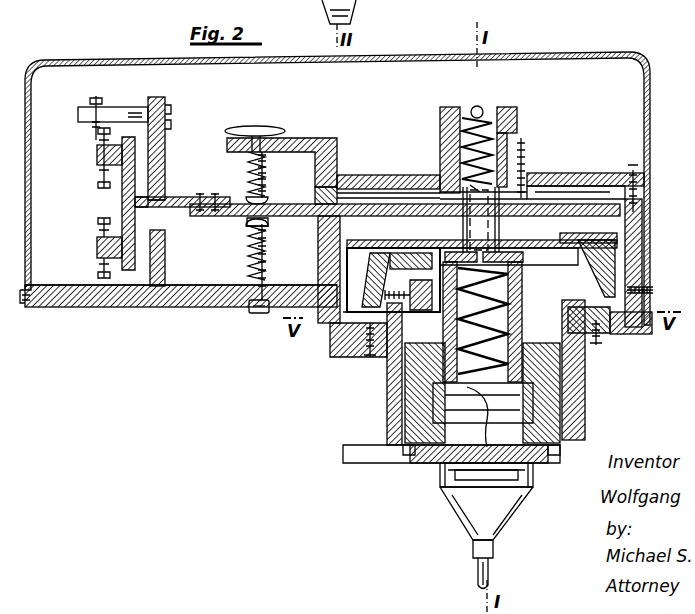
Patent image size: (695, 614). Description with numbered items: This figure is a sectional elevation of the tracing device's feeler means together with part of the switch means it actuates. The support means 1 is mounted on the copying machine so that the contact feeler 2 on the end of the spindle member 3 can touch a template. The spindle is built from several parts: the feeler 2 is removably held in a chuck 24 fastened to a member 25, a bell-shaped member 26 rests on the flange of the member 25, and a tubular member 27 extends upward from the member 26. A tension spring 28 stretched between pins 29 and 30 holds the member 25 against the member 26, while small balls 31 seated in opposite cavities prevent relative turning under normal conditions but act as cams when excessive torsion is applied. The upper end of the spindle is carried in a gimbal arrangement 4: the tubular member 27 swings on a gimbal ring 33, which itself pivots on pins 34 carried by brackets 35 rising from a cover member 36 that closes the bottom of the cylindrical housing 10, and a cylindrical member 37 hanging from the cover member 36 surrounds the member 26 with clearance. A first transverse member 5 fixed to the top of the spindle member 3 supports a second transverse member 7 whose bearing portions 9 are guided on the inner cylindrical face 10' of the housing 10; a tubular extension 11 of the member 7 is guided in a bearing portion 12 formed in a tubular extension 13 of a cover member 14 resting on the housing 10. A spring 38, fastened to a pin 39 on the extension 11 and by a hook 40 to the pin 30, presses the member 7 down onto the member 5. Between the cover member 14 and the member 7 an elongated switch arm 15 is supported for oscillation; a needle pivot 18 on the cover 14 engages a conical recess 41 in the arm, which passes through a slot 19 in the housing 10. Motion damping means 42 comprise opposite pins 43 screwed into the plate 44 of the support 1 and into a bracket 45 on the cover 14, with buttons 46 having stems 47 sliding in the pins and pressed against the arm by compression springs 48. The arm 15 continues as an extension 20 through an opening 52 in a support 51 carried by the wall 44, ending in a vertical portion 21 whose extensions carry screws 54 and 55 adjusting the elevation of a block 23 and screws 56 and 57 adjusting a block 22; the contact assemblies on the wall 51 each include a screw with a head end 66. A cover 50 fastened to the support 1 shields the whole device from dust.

The support means 1 is at (191, 313).
The contact feeler 2 is at (475, 562).
The spindle member 3 is at (405, 476).
The gimbal arrangement 4 is at (538, 322).
The first transverse member 5 is at (590, 246).
The second transverse member 7 is at (618, 243).
The bearing portions 9 is at (318, 276).
The housing 10 is at (311, 269).
The inner cylindrical face 10' is at (646, 266).
The tubular extension 11 is at (524, 138).
The bearing portion 12 is at (516, 120).
The tubular extension 13 is at (445, 126).
The cover member 14 is at (574, 178).
The elongated switch arm 15 is at (378, 180).
The needle pivot 18 is at (545, 173).
The slot 19 is at (343, 205).
The extension 20 is at (183, 197).
The vertically extending portion 21 is at (122, 196).
The block 22 is at (97, 246).
The block 23 is at (97, 152).
The chuck 24 is at (505, 517).
The member 25 is at (437, 467).
The bell-shaped member 26 is at (553, 414).
The tubular member 27 is at (420, 370).
The tension spring 28 is at (526, 248).
The pin 29 is at (515, 472).
The pin 30 is at (450, 256).
The balls 31 is at (407, 455).
The gimbal ring 33 is at (422, 280).
The pivot pins 34 is at (392, 290).
The brackets 35 is at (574, 300).
The cover member 36 is at (650, 291).
The cylindrical member 37 is at (578, 380).
The spring 38 is at (492, 112).
The pin 39 is at (477, 106).
The hook 40 is at (472, 184).
The conical recess 41 is at (630, 180).
The motion damping means 42 is at (237, 237).
The screw pins 43 is at (258, 127).
The plate 44 is at (126, 302).
The bracket 45 is at (300, 140).
The buttons 46 is at (267, 200).
The central stem 47 is at (250, 186).
The compression springs 48 is at (267, 163).
The cover 50 is at (85, 61).
The support 51 is at (166, 101).
The opening 52 is at (167, 197).
The screw 54 is at (114, 128).
The screw 55 is at (99, 184).
The screw 56 is at (99, 221).
The screw 57 is at (99, 274).
The head end 66 is at (94, 103).